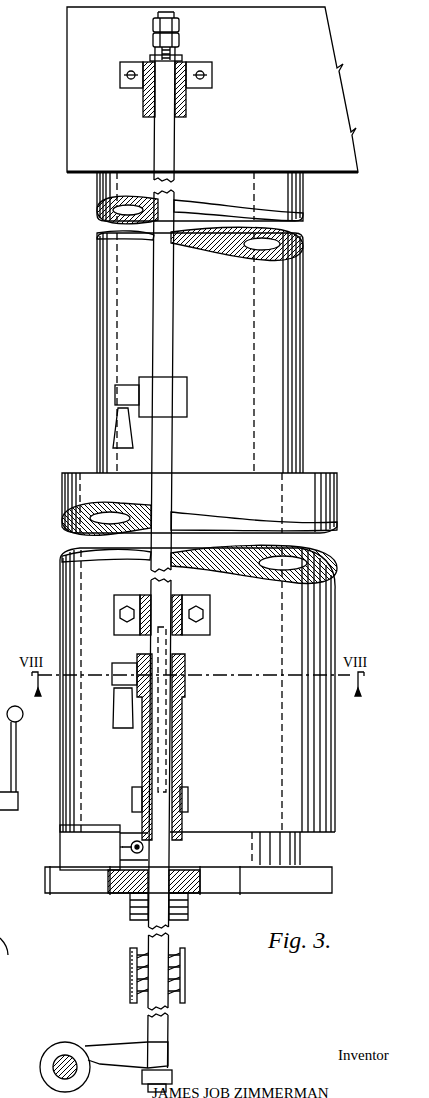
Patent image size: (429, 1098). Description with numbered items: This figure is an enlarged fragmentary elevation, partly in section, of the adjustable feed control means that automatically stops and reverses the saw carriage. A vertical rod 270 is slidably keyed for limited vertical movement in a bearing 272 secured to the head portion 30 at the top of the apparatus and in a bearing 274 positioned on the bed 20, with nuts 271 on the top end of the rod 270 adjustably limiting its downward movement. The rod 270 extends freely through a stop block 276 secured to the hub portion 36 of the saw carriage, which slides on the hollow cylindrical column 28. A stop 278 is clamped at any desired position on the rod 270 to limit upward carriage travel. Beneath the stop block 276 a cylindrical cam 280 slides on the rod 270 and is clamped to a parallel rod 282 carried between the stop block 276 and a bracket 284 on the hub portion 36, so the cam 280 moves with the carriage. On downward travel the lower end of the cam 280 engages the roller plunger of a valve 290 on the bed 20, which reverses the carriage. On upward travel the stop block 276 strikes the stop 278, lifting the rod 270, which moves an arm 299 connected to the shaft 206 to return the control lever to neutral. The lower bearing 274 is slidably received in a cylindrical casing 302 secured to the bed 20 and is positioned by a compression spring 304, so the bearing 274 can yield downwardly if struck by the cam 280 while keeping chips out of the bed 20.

The head portion 30 is at (343, 162).
The nuts 271 is at (180, 42).
The bearing 272 is at (185, 108).
The rod 270 is at (176, 340).
The column 28 is at (272, 412).
The stop 278 is at (178, 396).
The hub portion 36 is at (312, 603).
The stop block 276 is at (191, 635).
The cylindrical cam 280 is at (177, 733).
The rod 282 is at (165, 713).
The bracket 284 is at (188, 801).
The valve 290 is at (85, 838).
The bed 20 is at (72, 892).
The bearing 274 is at (167, 858).
The cylindrical casing 302 is at (186, 966).
The compression spring 304 is at (130, 965).
The shaft 206 is at (60, 1055).
The arm 299 is at (106, 1044).